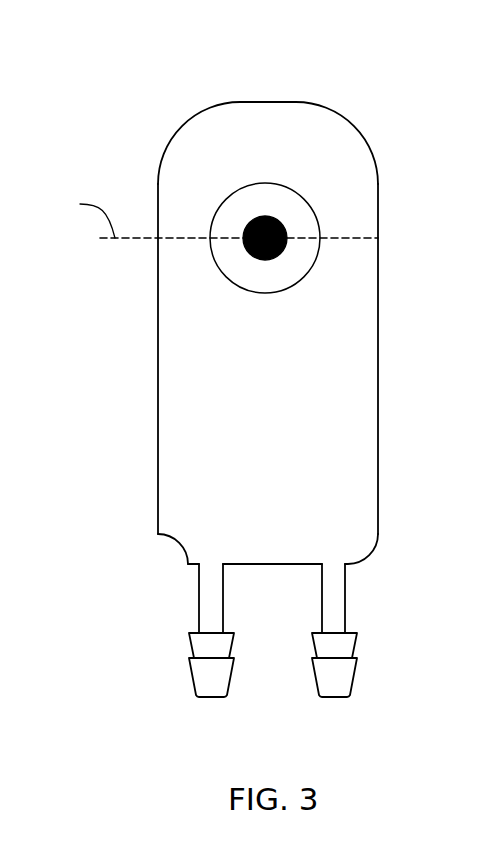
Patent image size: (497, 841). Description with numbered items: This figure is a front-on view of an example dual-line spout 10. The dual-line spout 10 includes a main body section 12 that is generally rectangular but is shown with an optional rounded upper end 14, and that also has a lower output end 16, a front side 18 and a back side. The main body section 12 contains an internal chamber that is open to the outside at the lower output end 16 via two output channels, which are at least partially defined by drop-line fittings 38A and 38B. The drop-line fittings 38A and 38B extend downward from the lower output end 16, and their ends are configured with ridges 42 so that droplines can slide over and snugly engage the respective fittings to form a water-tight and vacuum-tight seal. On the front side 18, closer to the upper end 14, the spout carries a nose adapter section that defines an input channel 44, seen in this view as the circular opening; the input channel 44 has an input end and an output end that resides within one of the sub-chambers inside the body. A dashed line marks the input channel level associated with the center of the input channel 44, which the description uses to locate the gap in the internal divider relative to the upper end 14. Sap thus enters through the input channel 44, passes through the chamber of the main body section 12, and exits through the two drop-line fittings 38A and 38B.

The dual-line spout 10 is at (287, 61).
The main body section 12 is at (146, 315).
The upper end 14 is at (217, 113).
The lower output end 16 is at (178, 558).
The front side 18 is at (335, 360).
The drop-line fitting 38A is at (172, 648).
The drop-line fitting 38B is at (370, 622).
The ridges 42 is at (192, 677).
The input channel 44 is at (282, 223).